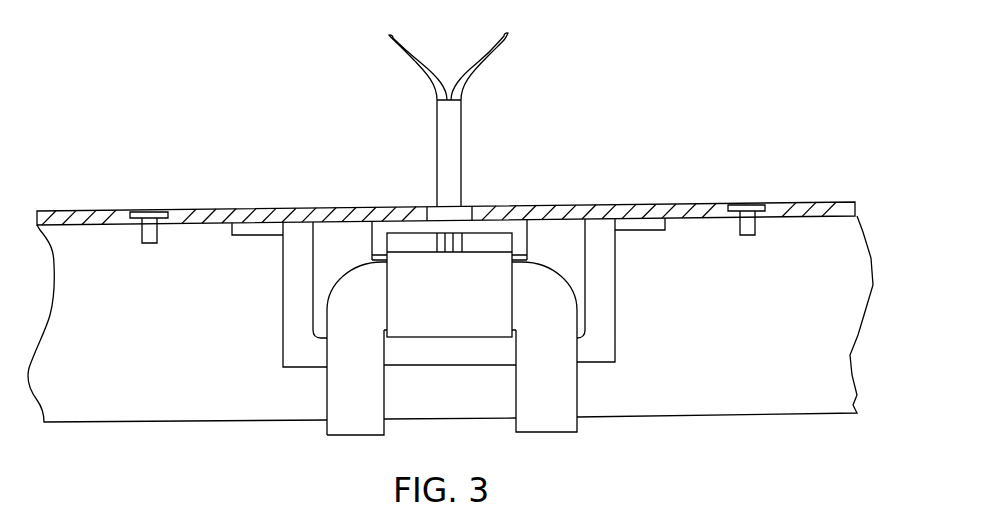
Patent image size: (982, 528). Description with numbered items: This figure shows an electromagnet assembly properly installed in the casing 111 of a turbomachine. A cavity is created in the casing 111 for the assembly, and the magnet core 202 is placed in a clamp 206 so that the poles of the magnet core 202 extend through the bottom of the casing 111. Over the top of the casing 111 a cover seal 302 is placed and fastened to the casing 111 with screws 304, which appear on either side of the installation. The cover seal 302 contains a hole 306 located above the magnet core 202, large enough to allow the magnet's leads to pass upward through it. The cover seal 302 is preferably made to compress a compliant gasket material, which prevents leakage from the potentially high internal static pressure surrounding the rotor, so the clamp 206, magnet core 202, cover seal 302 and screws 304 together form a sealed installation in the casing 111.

The casing 111 is at (773, 397).
The cover seal 302 is at (267, 210).
The screws 304 is at (150, 212).
The hole 306 is at (470, 202).
The clamp 206 is at (513, 223).
The magnet core 202 is at (368, 277).